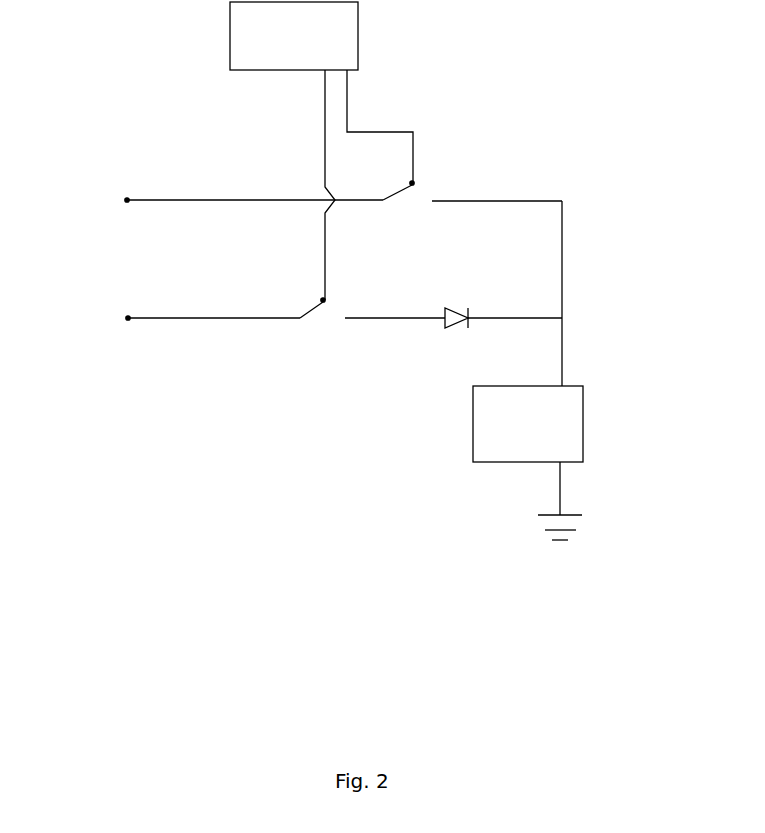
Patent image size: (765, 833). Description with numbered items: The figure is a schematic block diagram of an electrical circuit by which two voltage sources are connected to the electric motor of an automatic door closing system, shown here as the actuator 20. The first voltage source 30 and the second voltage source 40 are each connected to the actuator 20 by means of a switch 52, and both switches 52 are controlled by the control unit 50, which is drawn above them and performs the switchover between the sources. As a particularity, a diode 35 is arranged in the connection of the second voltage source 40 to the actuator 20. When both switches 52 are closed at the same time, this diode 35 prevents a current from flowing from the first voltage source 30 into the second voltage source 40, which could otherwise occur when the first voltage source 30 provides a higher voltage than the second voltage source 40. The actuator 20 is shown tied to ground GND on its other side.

The control unit 50 is at (358, 48).
The first voltage source 30 is at (127, 200).
The second voltage source 40 is at (128, 318).
The switch 52 is at (412, 183).
The diode 35 is at (470, 330).
The actuator 20 is at (583, 424).
The ground GND is at (590, 530).